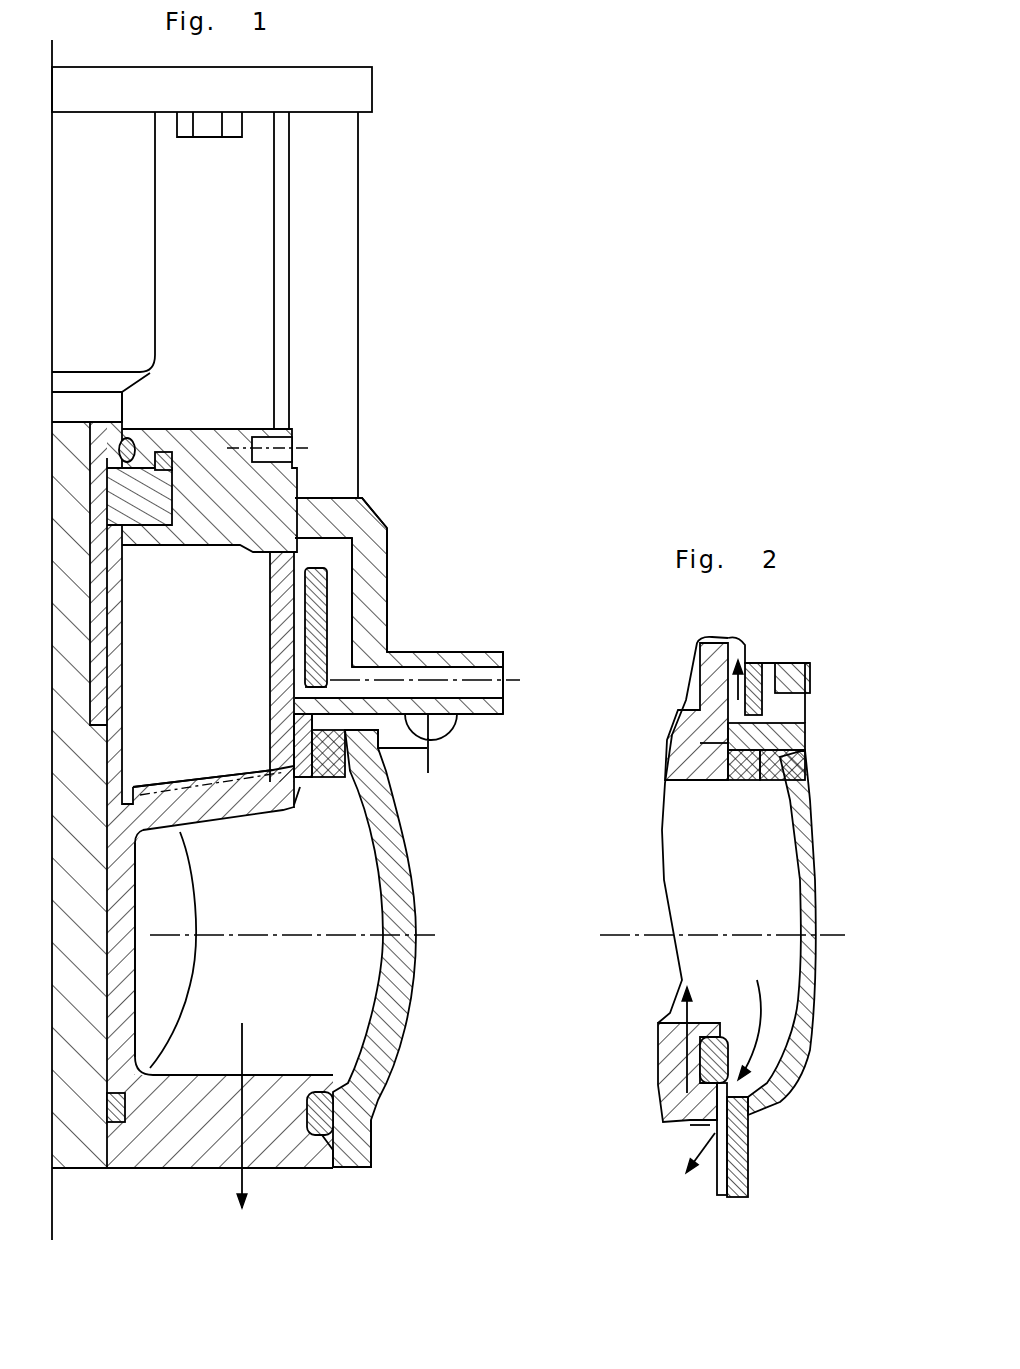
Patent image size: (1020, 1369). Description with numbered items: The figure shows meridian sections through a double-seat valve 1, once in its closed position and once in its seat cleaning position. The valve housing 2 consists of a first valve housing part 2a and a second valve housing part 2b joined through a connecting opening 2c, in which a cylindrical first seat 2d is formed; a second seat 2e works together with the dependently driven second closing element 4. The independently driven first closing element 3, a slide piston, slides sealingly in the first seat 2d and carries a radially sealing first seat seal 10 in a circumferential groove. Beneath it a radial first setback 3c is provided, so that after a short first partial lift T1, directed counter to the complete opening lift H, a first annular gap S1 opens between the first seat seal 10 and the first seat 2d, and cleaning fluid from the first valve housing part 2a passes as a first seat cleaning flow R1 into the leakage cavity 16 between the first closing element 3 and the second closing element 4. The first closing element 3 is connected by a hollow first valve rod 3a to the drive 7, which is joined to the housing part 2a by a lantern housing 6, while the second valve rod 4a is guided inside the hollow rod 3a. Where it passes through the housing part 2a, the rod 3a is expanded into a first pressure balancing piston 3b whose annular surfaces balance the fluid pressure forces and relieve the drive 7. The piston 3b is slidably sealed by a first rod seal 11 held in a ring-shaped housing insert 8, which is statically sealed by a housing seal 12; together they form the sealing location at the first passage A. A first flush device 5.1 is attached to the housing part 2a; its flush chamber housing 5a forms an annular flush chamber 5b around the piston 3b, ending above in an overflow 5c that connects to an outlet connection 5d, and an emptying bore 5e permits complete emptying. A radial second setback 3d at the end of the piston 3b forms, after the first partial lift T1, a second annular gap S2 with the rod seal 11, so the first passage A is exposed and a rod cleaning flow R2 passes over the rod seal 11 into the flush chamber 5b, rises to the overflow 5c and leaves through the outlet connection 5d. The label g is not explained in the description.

In FIG. 1, the drive 7 is at (108, 48).
In FIG. 1, the lantern housing 6 is at (328, 258).
In FIG. 1, the double-seat valve 1 is at (397, 497).
In FIG. 1, the overflow 5c is at (330, 547).
In FIG. 1, the first flush device 5.1 is at (390, 560).
In FIG. 1, the flush chamber 5b is at (300, 645).
In FIG. 1, the flush chamber housing 5a is at (357, 653).
In FIG. 1, the outlet connection 5d is at (443, 660).
In FIG. 1, the emptying bore 5e is at (320, 690).
In FIG. 1, the first pressure balancing piston 3b is at (270, 603).
In FIG. 2, the first pressure balancing piston 3b is at (715, 660).
In FIG. 1, the housing insert 8 is at (307, 718).
In FIG. 1, the ball g is at (452, 730).
In FIG. 1, the housing seal 12 is at (356, 790).
In FIG. 2, the housing seal 12 is at (770, 770).
In FIG. 1, the first rod seal 11 is at (348, 823).
In FIG. 2, the first rod seal 11 is at (735, 783).
In FIG. 1, the radial second setback 3d is at (288, 790).
In FIG. 1, the first passage A is at (300, 790).
In FIG. 1, the first valve rod 3a is at (77, 977).
In FIG. 1, the second valve rod 4a is at (150, 972).
In FIG. 1, the first seat seal 10 is at (328, 1092).
In FIG. 2, the first seat seal 10 is at (717, 1037).
In FIG. 1, the first valve housing part 2a is at (404, 1036).
In FIG. 2, the first valve housing part 2a is at (802, 895).
In FIG. 1, the first seat 2d is at (371, 1133).
In FIG. 2, the first seat 2d is at (720, 1182).
In FIG. 1, the valve housing 2 is at (386, 1174).
In FIG. 1, the second seat 2e is at (414, 975).
In FIG. 1, the second valve housing part 2b is at (441, 984).
In FIG. 1, the second closing element 4 is at (192, 828).
In FIG. 1, the first closing element 3 is at (142, 1155).
In FIG. 2, the first closing element 3 is at (668, 1040).
In FIG. 1, the connecting opening 2c is at (225, 1202).
In FIG. 1, the opening lift H is at (252, 1125).
In FIG. 1, the radial first setback 3c is at (330, 1150).
In FIG. 2, the radial first setback 3c is at (750, 1132).
In FIG. 2, the rod cleaning flow R2 is at (745, 665).
In FIG. 2, the second annular gap S2 is at (712, 750).
In FIG. 2, the first partial lift T1 is at (699, 1020).
In FIG. 2, the first seat cleaning flow R1 is at (760, 1020).
In FIG. 2, the first annular gap S1 is at (748, 1113).
In FIG. 2, the leakage cavity 16 is at (681, 1140).